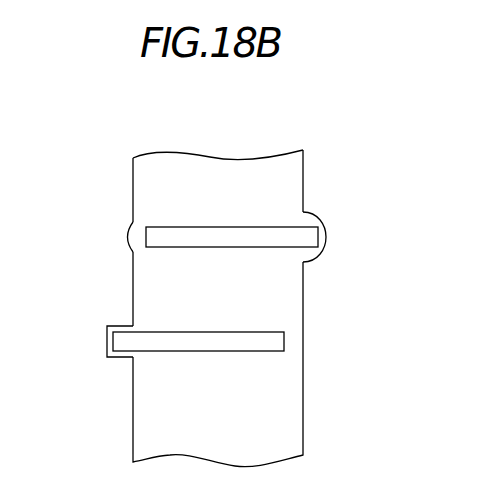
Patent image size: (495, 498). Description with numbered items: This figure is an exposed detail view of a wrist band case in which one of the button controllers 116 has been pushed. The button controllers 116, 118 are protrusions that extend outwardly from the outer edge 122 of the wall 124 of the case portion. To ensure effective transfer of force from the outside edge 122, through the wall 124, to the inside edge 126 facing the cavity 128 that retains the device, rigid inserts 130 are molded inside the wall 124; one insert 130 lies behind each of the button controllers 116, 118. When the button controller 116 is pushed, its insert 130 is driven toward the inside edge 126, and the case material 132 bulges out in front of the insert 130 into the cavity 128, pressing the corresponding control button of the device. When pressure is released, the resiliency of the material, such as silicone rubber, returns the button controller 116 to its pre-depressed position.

The button controller 116 is at (107, 340).
The button controller 118 is at (127, 235).
The outer edge 122 is at (132, 187).
The wall 124 is at (185, 168).
The inside edge 126 is at (304, 156).
The cavity 128 is at (400, 309).
The rigid insert 130 is at (252, 227).
The case material 132 is at (323, 242).